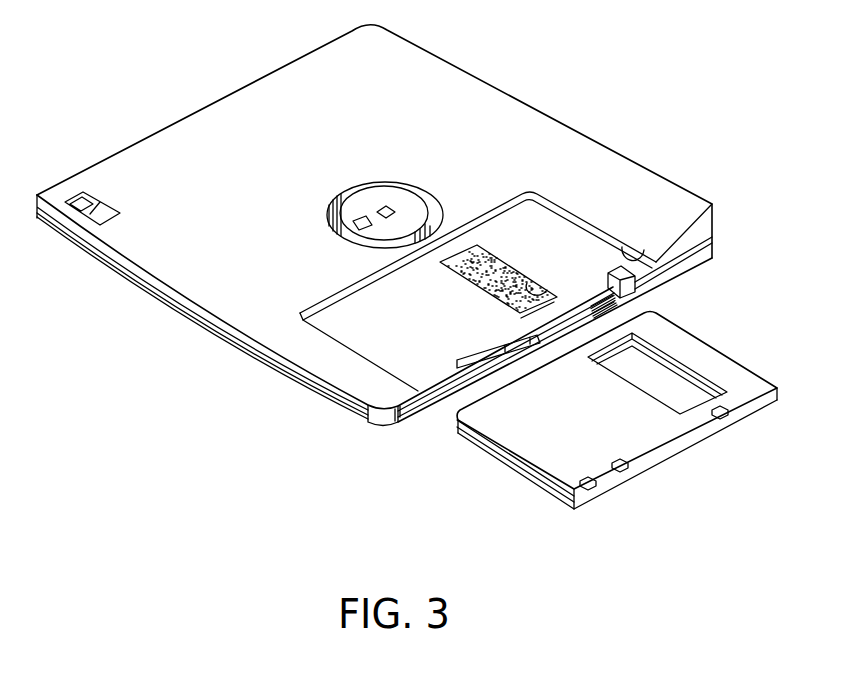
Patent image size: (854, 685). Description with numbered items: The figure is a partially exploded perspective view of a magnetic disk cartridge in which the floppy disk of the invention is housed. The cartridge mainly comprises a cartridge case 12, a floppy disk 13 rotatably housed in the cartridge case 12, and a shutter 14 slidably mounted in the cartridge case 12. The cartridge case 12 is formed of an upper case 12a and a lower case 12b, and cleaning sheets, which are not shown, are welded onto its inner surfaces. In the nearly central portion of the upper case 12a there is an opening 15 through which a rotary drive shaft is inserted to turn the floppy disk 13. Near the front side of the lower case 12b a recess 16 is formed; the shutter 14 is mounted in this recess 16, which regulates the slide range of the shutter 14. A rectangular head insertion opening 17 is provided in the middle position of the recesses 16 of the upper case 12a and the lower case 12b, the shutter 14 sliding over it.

The cartridge case 12 is at (291, 462).
The upper case 12a is at (183, 307).
The lower case 12b is at (270, 348).
The floppy disk 13 is at (503, 273).
The shutter 14 is at (525, 437).
The opening 15 is at (376, 184).
The recess 16 is at (650, 258).
The head insertion opening 17 is at (562, 293).